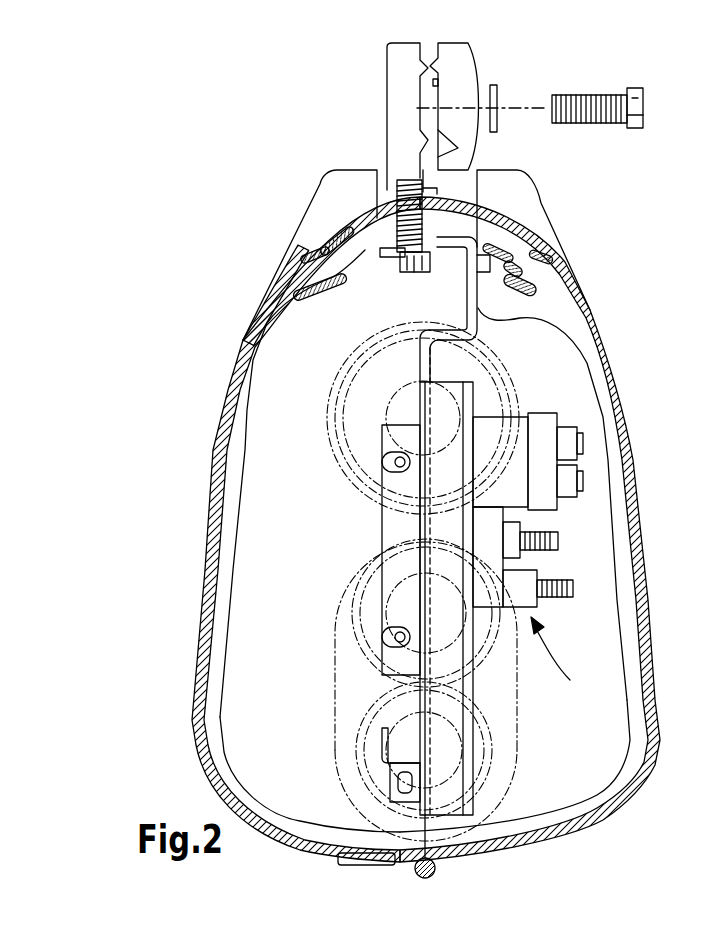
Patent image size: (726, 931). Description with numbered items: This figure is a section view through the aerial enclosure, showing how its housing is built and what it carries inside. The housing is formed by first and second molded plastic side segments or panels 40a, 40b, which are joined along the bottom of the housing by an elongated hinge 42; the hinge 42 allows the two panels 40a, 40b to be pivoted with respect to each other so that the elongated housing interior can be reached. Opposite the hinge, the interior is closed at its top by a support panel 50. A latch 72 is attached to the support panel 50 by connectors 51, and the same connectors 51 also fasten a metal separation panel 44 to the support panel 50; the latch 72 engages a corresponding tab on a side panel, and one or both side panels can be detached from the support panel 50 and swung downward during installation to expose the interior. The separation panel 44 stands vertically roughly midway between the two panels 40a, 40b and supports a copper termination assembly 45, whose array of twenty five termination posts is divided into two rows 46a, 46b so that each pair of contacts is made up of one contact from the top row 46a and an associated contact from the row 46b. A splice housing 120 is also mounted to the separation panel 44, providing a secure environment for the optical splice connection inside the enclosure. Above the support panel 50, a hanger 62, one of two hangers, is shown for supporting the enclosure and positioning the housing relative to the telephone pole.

The first housing side segment 40a is at (215, 452).
The second housing side segment 40b is at (637, 462).
The hinge 42 is at (433, 862).
The separation panel 44 is at (506, 330).
The termination assembly 45 is at (565, 655).
The top row of contact posts 46a is at (558, 540).
The second row of contact posts 46b is at (574, 588).
The support panel 50 is at (472, 197).
The connectors 51 is at (410, 278).
The hanger 62 is at (458, 62).
The latch 72 is at (397, 232).
The splice housing 120 is at (407, 533).